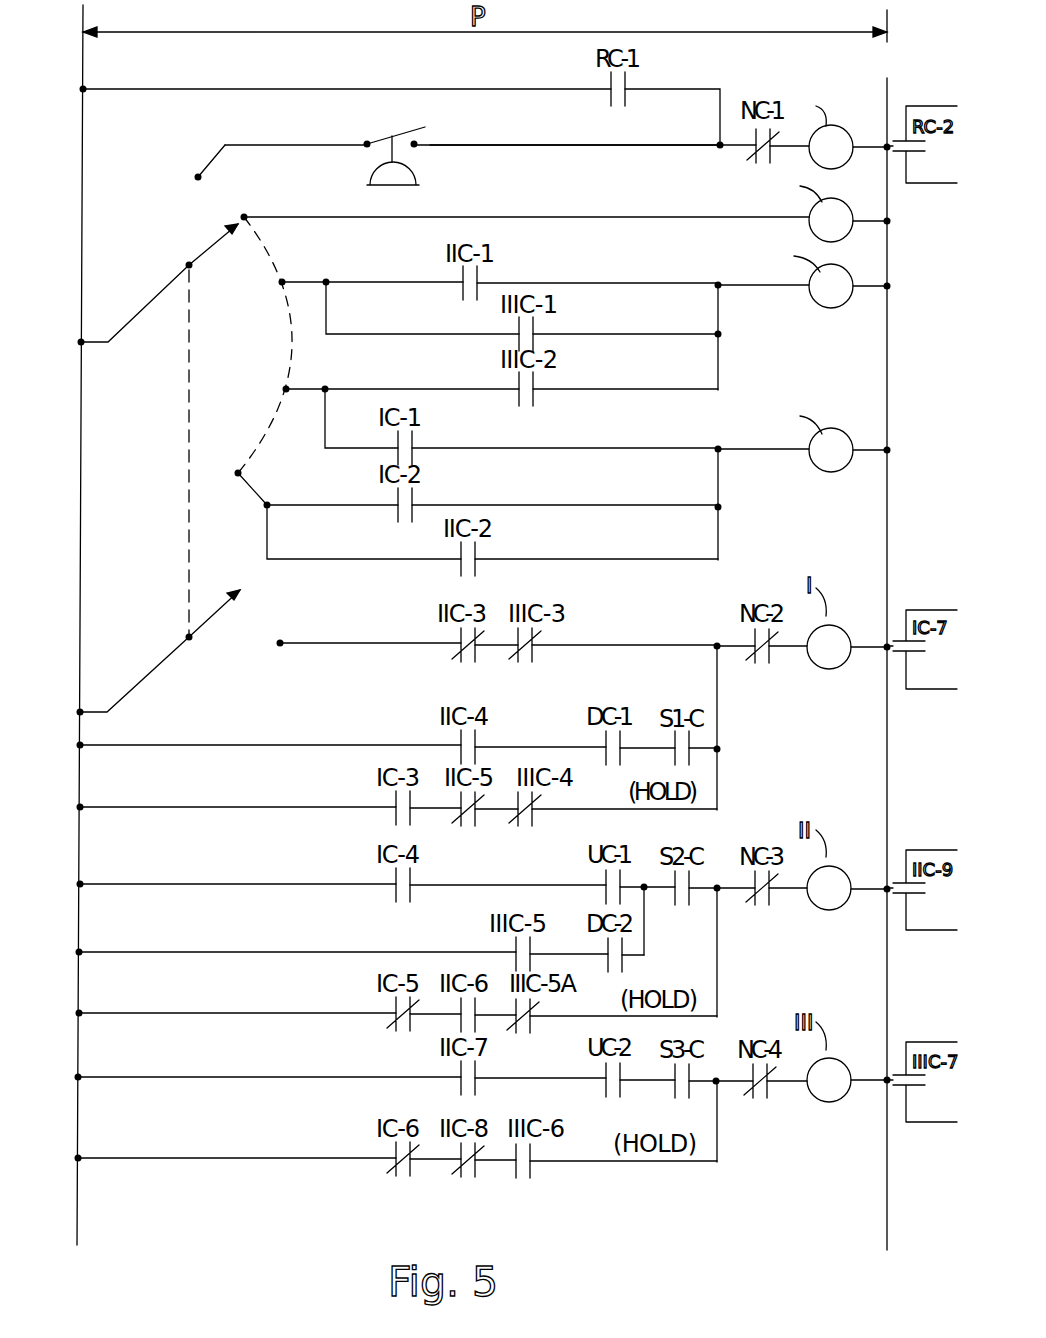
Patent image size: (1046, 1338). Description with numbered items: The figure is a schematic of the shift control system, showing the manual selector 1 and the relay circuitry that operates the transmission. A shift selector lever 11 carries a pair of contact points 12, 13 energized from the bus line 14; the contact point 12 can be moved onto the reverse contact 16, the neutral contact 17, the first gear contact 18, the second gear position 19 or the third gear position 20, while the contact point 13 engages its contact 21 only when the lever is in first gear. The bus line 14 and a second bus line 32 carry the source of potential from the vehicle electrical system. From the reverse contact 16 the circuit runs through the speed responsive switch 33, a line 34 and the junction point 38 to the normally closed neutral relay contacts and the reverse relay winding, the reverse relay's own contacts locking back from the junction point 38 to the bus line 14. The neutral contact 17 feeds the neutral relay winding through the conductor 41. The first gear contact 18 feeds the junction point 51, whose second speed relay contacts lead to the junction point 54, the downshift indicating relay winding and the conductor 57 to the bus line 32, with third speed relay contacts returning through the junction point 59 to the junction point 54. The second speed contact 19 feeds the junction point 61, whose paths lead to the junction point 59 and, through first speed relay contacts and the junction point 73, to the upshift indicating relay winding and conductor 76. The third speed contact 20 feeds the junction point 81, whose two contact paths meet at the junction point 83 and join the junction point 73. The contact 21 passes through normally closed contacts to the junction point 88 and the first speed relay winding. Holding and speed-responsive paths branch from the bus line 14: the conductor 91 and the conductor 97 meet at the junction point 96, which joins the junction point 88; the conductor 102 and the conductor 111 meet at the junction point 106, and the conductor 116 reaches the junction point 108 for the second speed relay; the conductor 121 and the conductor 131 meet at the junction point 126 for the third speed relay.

The manual selector 1 is at (138, 212).
The shift selector lever 11 is at (208, 250).
The contact point 12 is at (250, 232).
The contact point 13 is at (240, 592).
The bus line 14 is at (79, 482).
The reverse contact 16 is at (202, 176).
The neutral contact 17 is at (250, 222).
The first gear contact 18 is at (282, 292).
The second gear position contact 19 is at (288, 388).
The third gear position contact 20 is at (244, 472).
The second first speed contact 21 is at (280, 648).
The bus line 32 is at (893, 62).
The speed responsive switch 33 is at (405, 130).
The line 34 is at (580, 148).
The junction point 38 is at (720, 152).
The conductor 41 is at (500, 218).
The junction point 51 is at (326, 282).
The junction point 54 is at (718, 284).
The conductor 57 is at (872, 292).
The junction point 59 is at (718, 334).
The junction point 61 is at (325, 389).
The junction point 73 is at (718, 449).
The conductor 76 is at (874, 456).
The junction point 81 is at (267, 505).
The junction point 83 is at (718, 508).
The junction point 88 is at (717, 646).
The conductor 91 is at (310, 746).
The junction point 96 is at (717, 749).
The conductor 97 is at (258, 809).
The conductor 102 is at (258, 886).
The junction point 106 is at (645, 893).
The junction point 108 is at (718, 893).
The conductor 111 is at (275, 953).
The conductor 116 is at (256, 1014).
The conductor 121 is at (256, 1078).
The junction point 126 is at (717, 1085).
The conductor 131 is at (244, 1160).